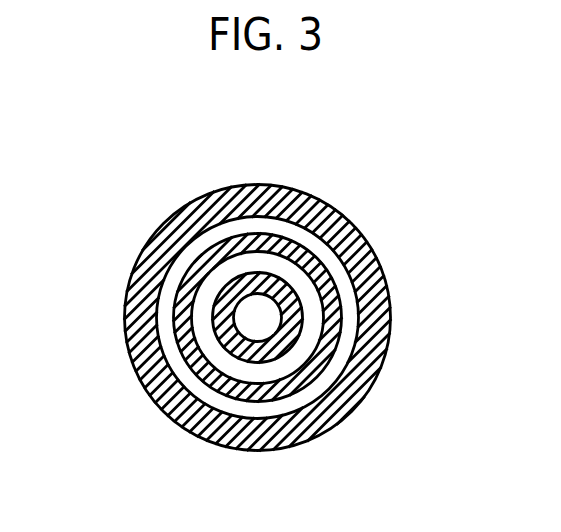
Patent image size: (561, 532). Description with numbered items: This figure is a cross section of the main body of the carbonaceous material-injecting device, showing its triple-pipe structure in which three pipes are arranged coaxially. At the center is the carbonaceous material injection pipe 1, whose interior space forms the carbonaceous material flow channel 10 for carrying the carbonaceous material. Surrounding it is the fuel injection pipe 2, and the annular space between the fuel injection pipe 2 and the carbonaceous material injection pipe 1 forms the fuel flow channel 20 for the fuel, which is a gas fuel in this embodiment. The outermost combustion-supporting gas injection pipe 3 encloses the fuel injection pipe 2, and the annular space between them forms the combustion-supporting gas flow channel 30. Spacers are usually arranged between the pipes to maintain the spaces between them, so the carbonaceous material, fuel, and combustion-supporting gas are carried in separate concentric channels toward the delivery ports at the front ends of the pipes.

The carbonaceous material injection pipe 1 is at (253, 272).
The fuel injection pipe 2 is at (328, 266).
The combustion-supporting gas injection pipe 3 is at (393, 330).
The carbonaceous material flow channel 10 is at (243, 314).
The fuel flow channel 20 is at (217, 353).
The combustion-supporting gas flow channel 30 is at (257, 408).